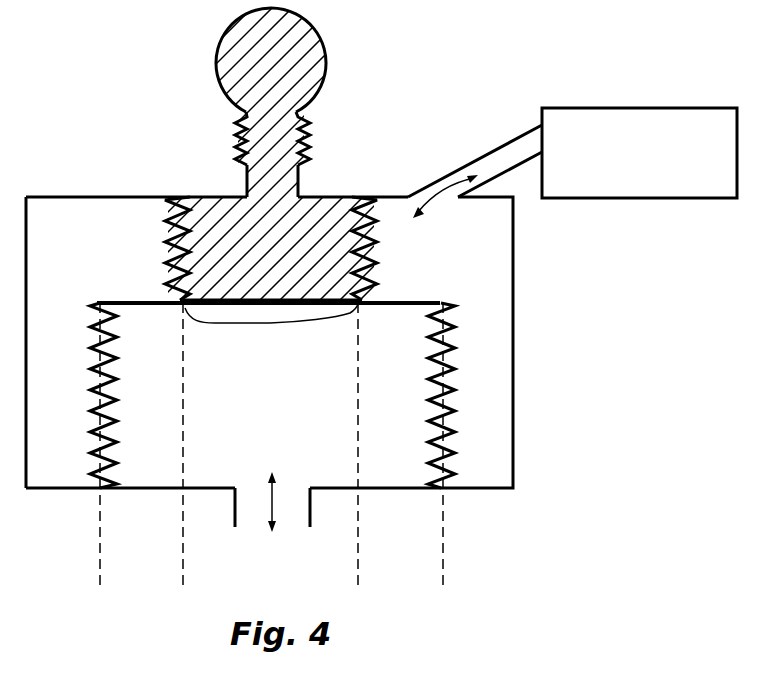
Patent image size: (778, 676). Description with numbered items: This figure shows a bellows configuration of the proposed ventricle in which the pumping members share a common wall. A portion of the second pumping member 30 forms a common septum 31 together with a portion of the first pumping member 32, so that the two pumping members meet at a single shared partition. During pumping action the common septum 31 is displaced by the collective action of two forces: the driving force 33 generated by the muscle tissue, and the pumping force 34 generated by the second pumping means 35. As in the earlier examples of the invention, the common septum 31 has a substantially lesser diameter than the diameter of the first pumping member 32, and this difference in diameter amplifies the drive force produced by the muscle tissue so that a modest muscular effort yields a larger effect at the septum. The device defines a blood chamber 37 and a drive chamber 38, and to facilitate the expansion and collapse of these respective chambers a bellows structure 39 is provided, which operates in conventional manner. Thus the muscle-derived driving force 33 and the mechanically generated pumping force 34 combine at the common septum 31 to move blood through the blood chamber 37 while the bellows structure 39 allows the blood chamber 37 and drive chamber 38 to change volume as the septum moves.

The second pumping member 30 is at (430, 303).
The common septum 31 is at (270, 323).
The first pumping member 32 is at (105, 350).
The driving force 33 is at (273, 505).
The pumping force 34 is at (446, 202).
The second pumping means 35 is at (639, 153).
The blood chamber 37 is at (241, 233).
The drive chamber 38 is at (148, 447).
The bellows structure 39 is at (450, 432).